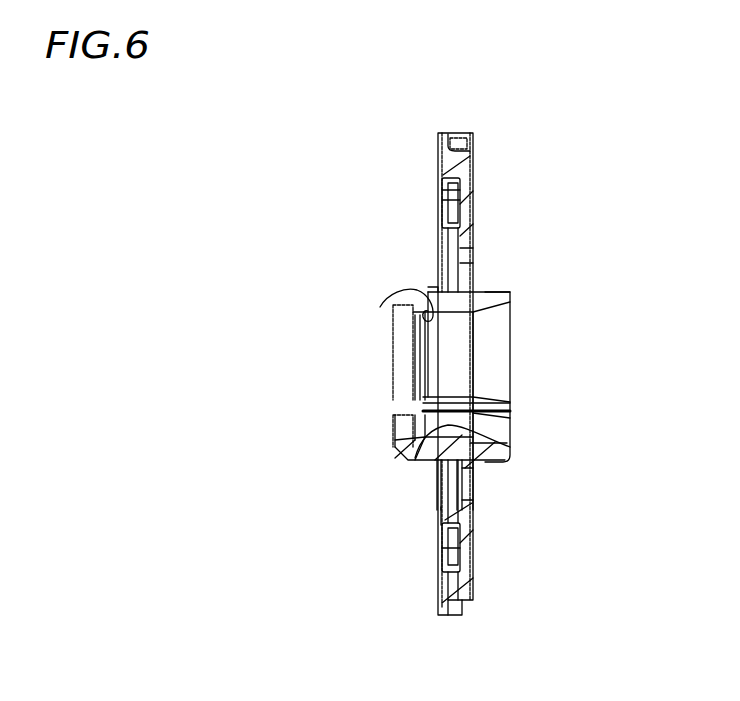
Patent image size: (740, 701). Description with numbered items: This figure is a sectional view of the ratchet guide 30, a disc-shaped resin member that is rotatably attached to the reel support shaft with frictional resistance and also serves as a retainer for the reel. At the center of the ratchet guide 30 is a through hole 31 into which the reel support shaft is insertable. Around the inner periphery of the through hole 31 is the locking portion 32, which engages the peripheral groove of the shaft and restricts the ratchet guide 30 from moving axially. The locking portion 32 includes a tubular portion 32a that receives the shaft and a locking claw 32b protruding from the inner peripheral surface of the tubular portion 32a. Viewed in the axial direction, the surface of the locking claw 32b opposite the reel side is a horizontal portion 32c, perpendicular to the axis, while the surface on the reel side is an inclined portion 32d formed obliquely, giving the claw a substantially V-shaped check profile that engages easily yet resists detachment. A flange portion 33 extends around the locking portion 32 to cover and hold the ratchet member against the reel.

The ratchet guide 30 is at (557, 213).
The through hole 31 is at (466, 353).
The locking portion 32 is at (430, 462).
The tubular portion 32a is at (430, 460).
The locking claw 32b is at (413, 322).
The horizontal portion 32c is at (388, 310).
The inclined portion 32d is at (432, 318).
The flange portion 33 is at (477, 172).